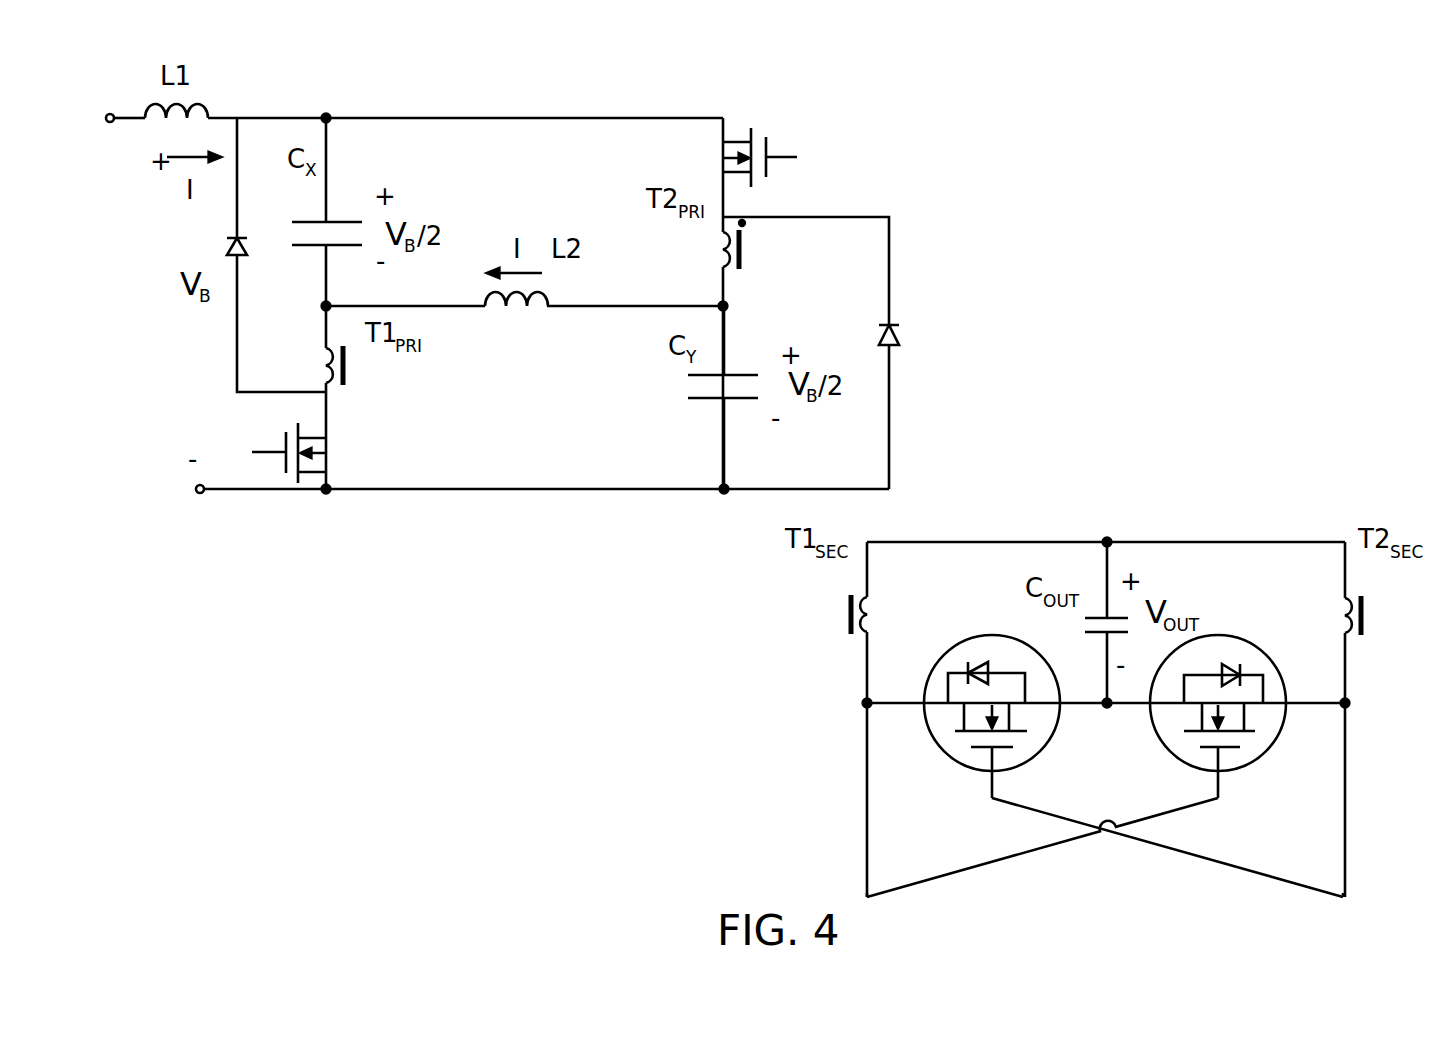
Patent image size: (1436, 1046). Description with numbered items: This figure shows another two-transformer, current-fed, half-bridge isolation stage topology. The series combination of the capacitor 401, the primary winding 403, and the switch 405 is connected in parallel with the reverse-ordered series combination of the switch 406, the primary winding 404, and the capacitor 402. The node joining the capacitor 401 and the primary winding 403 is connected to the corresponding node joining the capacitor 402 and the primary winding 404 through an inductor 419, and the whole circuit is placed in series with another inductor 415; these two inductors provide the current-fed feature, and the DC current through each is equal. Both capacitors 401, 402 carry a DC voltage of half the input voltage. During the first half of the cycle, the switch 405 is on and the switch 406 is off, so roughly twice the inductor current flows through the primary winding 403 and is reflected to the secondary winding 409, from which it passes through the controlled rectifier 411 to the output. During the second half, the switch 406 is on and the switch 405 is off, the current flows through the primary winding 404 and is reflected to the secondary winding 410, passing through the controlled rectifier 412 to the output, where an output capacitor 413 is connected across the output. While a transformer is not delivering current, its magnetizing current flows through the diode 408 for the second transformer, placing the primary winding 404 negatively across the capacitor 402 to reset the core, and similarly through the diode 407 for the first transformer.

The capacitor 401 is at (307, 220).
The capacitor 402 is at (700, 400).
The primary winding 403 is at (348, 366).
The primary winding 404 is at (728, 250).
The switch 405 is at (284, 450).
The switch 406 is at (768, 175).
The diode 407 is at (243, 257).
The diode 408 is at (893, 347).
The secondary winding 409 is at (873, 612).
The secondary winding 410 is at (1341, 614).
The controlled rectifier 411 is at (955, 766).
The controlled rectifier 412 is at (1252, 764).
The output capacitor 413 is at (1098, 637).
The inductor 415 is at (208, 106).
The inductor L2 419 is at (507, 303).